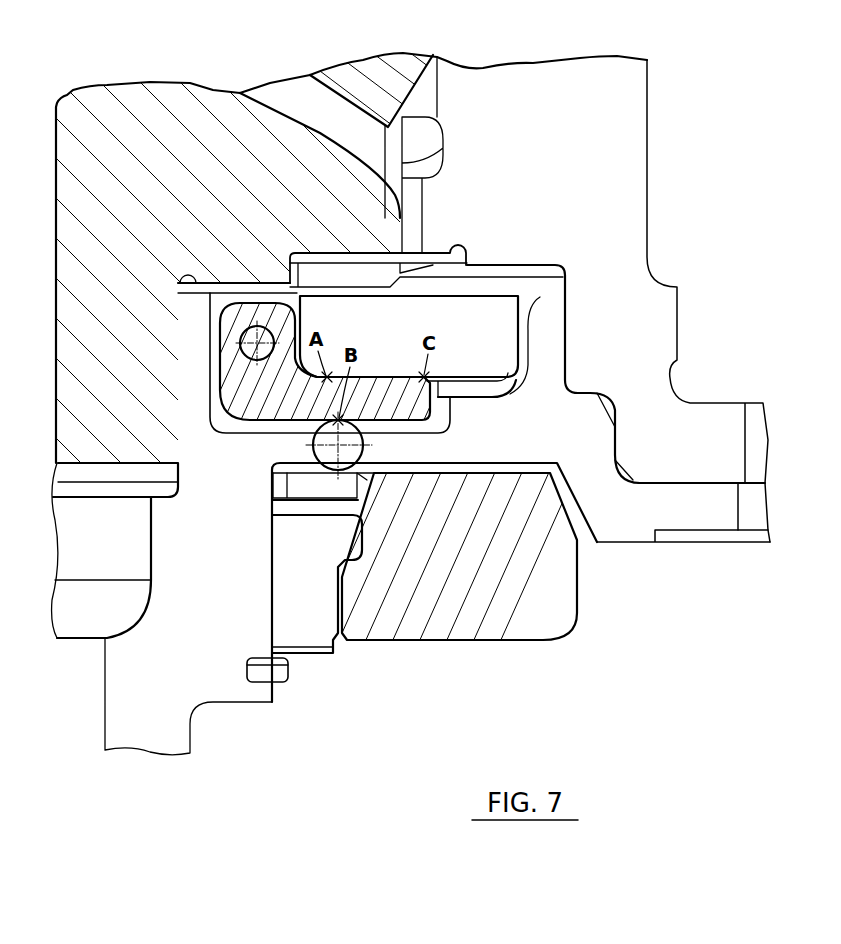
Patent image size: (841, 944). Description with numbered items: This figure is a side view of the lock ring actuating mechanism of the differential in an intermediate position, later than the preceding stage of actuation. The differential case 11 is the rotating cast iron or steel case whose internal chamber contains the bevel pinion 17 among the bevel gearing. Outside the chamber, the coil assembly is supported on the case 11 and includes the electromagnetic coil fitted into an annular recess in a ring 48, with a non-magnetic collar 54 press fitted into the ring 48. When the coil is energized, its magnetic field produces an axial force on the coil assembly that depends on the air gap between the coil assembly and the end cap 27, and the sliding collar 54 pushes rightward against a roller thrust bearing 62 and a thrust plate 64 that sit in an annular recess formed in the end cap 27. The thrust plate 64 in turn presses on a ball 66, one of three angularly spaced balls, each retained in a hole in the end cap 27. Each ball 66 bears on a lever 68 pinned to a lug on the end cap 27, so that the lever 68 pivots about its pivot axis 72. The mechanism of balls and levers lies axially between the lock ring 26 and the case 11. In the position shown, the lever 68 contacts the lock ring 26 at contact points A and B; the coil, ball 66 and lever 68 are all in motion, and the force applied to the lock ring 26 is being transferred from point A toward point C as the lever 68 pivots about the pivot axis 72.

The differential case 11 is at (701, 415).
The bevel pinion 17 is at (398, 77).
The lock ring 26 is at (493, 333).
The end cap 27 is at (683, 507).
The ring 48 is at (527, 642).
The non-magnetic collar 54 is at (290, 613).
The roller thrust bearing 62 is at (287, 508).
The thrust plate 64 is at (300, 488).
The ball 66 is at (313, 446).
The lever 68 is at (282, 396).
The pivot axis 72 is at (241, 340).